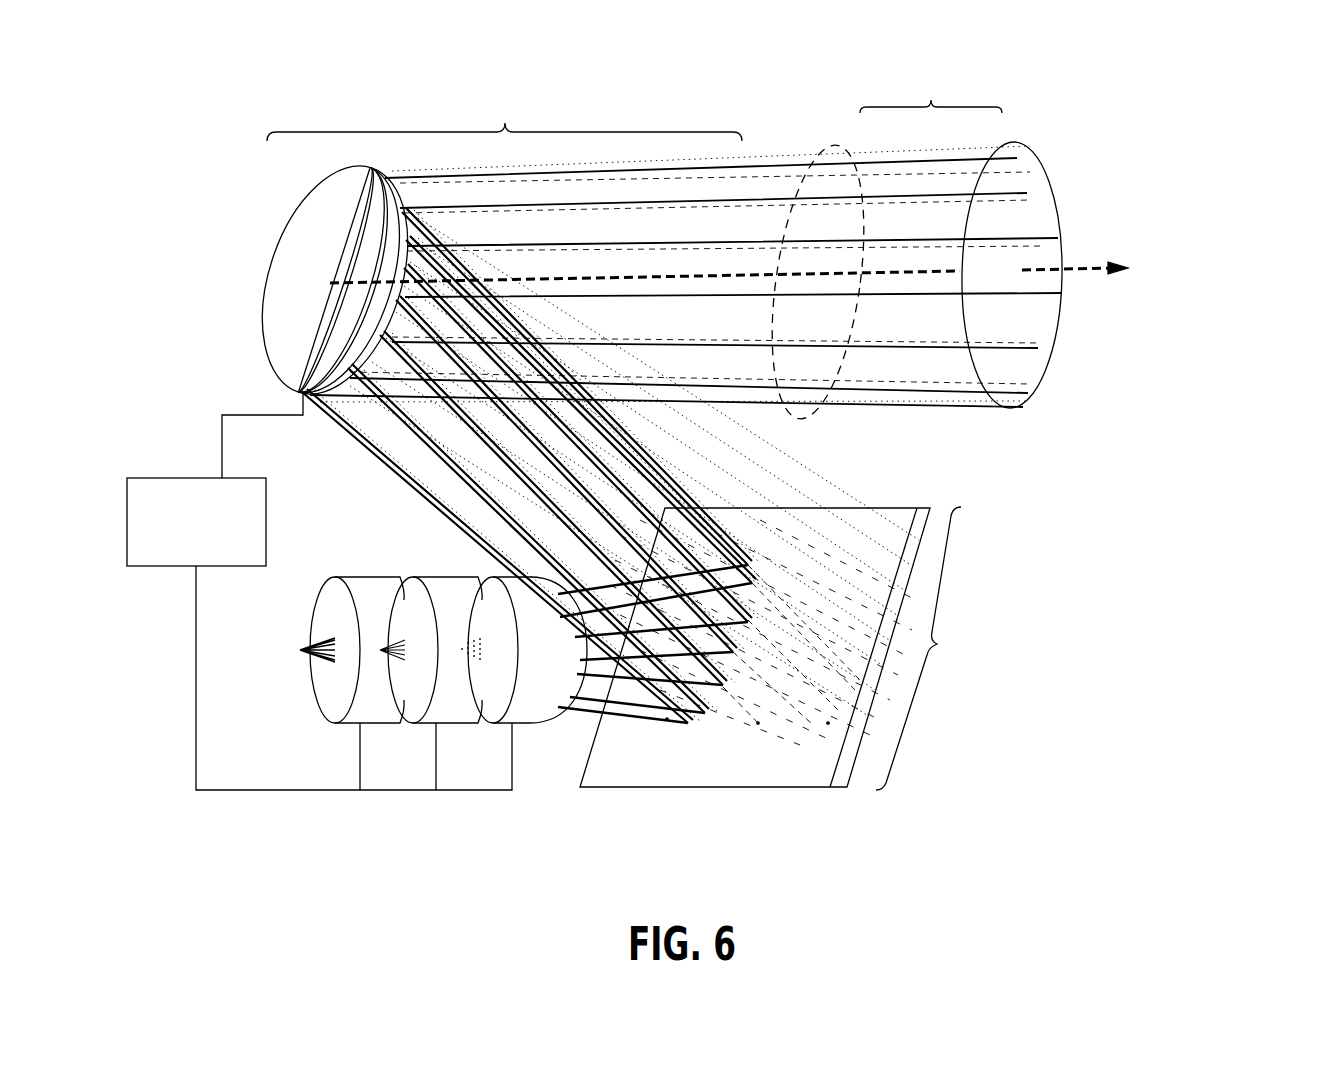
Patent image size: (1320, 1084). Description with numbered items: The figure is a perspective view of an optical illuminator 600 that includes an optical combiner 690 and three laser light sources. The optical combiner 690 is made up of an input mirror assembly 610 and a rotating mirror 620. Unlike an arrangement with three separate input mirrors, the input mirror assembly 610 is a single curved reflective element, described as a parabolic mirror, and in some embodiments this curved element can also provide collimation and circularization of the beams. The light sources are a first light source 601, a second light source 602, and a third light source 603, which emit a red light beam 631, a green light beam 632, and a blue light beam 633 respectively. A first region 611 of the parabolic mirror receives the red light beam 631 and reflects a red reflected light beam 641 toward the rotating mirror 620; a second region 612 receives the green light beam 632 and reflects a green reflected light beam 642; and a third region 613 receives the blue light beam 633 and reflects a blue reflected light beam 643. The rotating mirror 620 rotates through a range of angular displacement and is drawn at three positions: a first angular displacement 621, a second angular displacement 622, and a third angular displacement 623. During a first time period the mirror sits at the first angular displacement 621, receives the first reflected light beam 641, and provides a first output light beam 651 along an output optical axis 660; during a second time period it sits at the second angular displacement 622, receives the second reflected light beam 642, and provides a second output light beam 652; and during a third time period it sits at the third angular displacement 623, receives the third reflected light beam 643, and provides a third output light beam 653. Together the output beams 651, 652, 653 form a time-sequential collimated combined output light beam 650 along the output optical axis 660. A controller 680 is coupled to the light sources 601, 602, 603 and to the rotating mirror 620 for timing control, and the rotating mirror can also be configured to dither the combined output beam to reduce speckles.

The optical illuminator 600 is at (1178, 94).
The first light source 601 is at (506, 723).
The second light source 602 is at (352, 723).
The third light source 603 is at (428, 723).
The input mirror assembly 610 is at (781, 648).
The first region 611 is at (828, 725).
The second region 612 is at (667, 720).
The third region 613 is at (758, 725).
The rotating mirror 620 is at (330, 274).
The first angular displacement position 621 is at (368, 220).
The second angular displacement position 622 is at (378, 273).
The third angular displacement position 623 is at (375, 312).
The red light beam 631 is at (812, 722).
The green light beam 632 is at (632, 716).
The blue light beam 633 is at (728, 718).
The red reflected light beam 641 is at (368, 438).
The green reflected light beam 642 is at (395, 480).
The blue reflected light beam 643 is at (440, 496).
The time-sequential collimated combined output light beam 650 is at (687, 249).
The first output light beam 651 is at (707, 161).
The second output light beam 652 is at (733, 267).
The third output light beam 653 is at (675, 372).
The output optical axis 660 is at (1084, 266).
The controller 680 is at (167, 478).
The optical combiner 690 is at (504, 119).